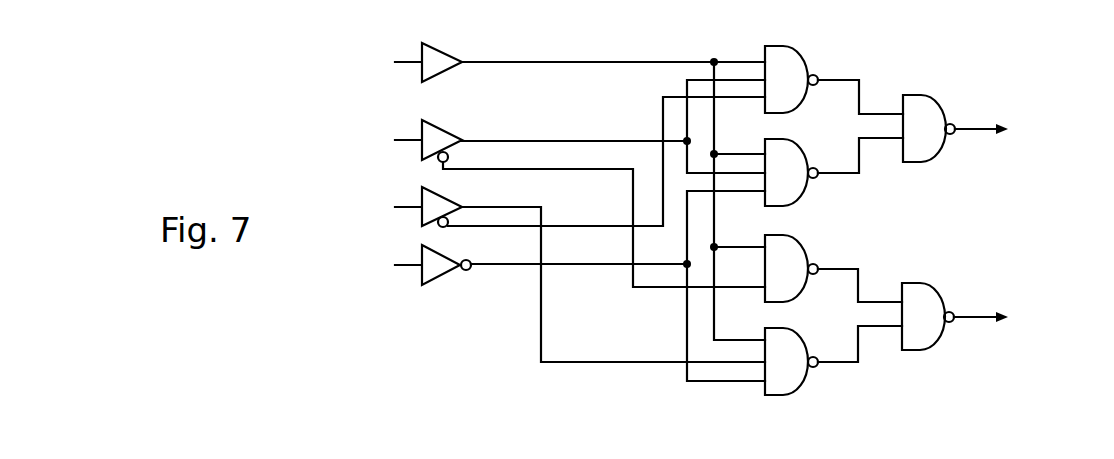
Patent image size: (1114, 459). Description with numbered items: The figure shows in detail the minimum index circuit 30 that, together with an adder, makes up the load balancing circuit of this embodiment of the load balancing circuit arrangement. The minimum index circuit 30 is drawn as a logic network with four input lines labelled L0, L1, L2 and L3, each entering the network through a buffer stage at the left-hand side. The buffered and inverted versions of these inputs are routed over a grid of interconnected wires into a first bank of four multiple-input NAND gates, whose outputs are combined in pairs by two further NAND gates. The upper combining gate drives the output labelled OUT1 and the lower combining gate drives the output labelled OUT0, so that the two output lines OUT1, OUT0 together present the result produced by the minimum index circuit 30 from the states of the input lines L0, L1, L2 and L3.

The minimum index circuit 30 is at (716, 219).
The input line L0 with buffer L0 is at (559, 62).
The input line L1 with buffer/inverter L1 is at (559, 203).
The input line L2 with buffer/inverter L2 is at (559, 229).
The input line L3 with inverter L3 is at (520, 265).
The output OUT1 NAND gate OUT1 is at (944, 126).
The output OUT0 NAND gate OUT0 is at (945, 315).